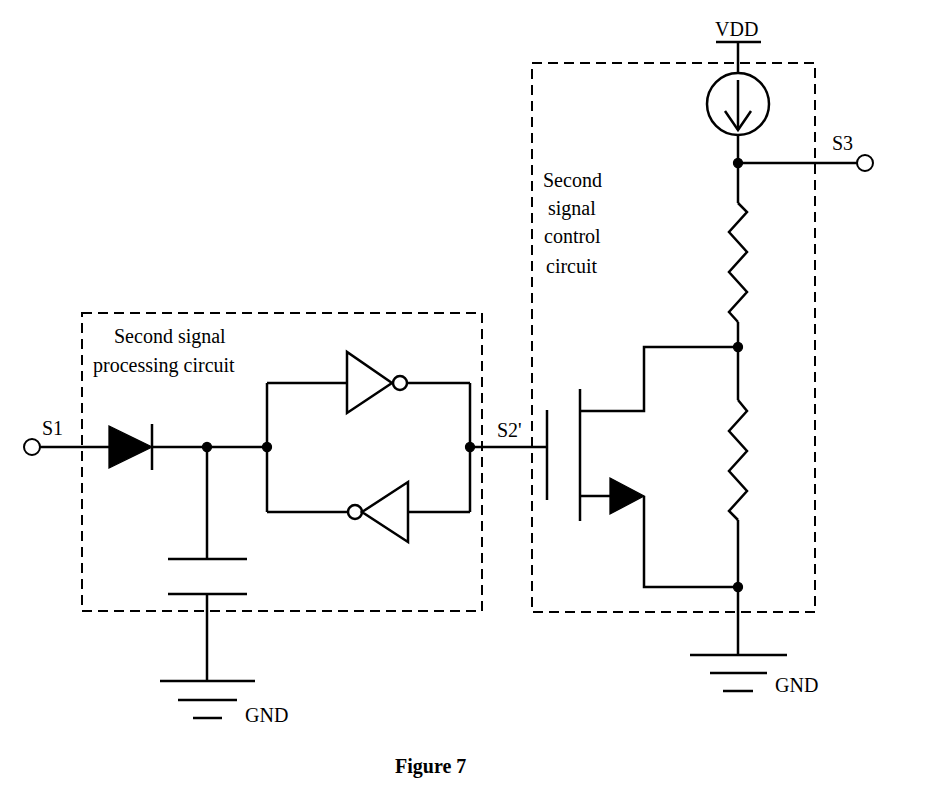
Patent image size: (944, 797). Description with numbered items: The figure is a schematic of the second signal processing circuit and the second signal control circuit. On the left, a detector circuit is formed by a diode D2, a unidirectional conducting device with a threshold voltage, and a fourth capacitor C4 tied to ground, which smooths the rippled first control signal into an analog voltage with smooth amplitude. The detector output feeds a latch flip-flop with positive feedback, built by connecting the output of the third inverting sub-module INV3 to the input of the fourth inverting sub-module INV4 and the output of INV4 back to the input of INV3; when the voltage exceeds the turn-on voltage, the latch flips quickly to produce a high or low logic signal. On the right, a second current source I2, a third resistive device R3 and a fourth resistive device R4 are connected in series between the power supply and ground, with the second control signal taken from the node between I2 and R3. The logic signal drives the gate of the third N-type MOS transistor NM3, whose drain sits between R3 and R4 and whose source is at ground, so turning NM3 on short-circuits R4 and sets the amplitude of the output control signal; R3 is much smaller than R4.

The diode D2 is at (130, 435).
The fourth capacitor C4 is at (223, 576).
The third inverting sub-module INV3 is at (377, 369).
The fourth inverting sub-module INV4 is at (378, 530).
The third N-type MOS transistor NM3 is at (642, 467).
The second current source I2 is at (750, 104).
The third resistive device R3 is at (757, 262).
The fourth resistive device R4 is at (760, 460).